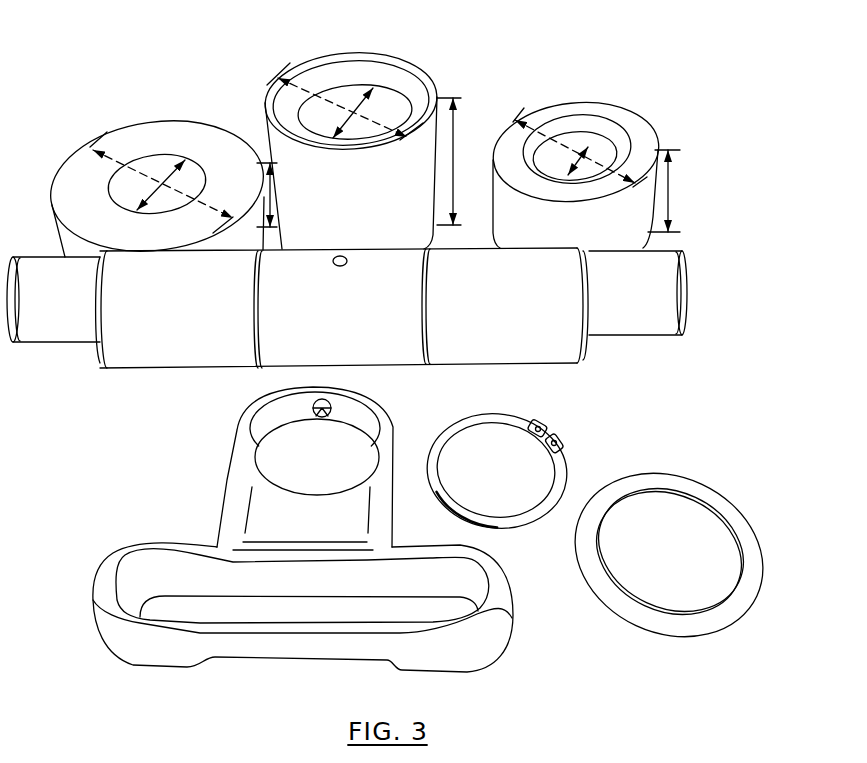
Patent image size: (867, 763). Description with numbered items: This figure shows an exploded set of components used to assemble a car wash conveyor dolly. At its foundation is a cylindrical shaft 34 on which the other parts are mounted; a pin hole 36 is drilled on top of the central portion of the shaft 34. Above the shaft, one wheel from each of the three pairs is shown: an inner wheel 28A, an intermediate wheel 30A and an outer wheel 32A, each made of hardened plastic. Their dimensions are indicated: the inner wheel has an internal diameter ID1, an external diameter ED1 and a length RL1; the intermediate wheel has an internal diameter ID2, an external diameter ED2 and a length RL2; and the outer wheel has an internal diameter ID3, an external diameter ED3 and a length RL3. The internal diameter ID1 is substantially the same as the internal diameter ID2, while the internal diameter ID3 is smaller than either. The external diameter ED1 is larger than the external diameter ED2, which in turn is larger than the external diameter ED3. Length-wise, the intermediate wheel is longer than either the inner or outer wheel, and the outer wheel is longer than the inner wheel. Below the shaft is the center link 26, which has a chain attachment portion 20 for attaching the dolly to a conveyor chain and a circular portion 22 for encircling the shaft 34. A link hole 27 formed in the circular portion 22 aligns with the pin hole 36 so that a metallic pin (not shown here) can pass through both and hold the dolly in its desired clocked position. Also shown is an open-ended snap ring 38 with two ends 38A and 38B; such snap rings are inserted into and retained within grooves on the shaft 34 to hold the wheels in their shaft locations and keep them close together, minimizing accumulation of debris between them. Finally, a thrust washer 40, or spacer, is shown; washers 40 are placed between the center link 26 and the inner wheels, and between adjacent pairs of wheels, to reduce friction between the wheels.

The chain attachment portion 20 is at (467, 620).
The circular portion 22 is at (240, 453).
The center link 26 is at (108, 570).
The link hole 27 is at (322, 417).
The inner wheel 28A is at (183, 130).
The intermediate wheel 30A is at (383, 60).
The outer wheel 32A is at (612, 120).
The cylindrical shaft 34 is at (95, 389).
The pin hole 36 is at (347, 262).
The snap ring 38 is at (457, 507).
The snap ring end 38A is at (546, 425).
The snap ring end 38B is at (564, 440).
The thrust washer 40 is at (679, 485).
The external diameter of inner wheel ED1 is at (161, 182).
The internal diameter of inner wheel ID1 is at (151, 185).
The length of inner wheel RL1 is at (267, 163).
The external diameter of intermediate wheel ED2 is at (345, 101).
The internal diameter of intermediate wheel ID2 is at (338, 113).
The length of intermediate wheel RL2 is at (455, 157).
The external diameter of outer wheel ED3 is at (580, 147).
The internal diameter of outer wheel ID3 is at (562, 161).
The length of outer wheel RL3 is at (678, 191).